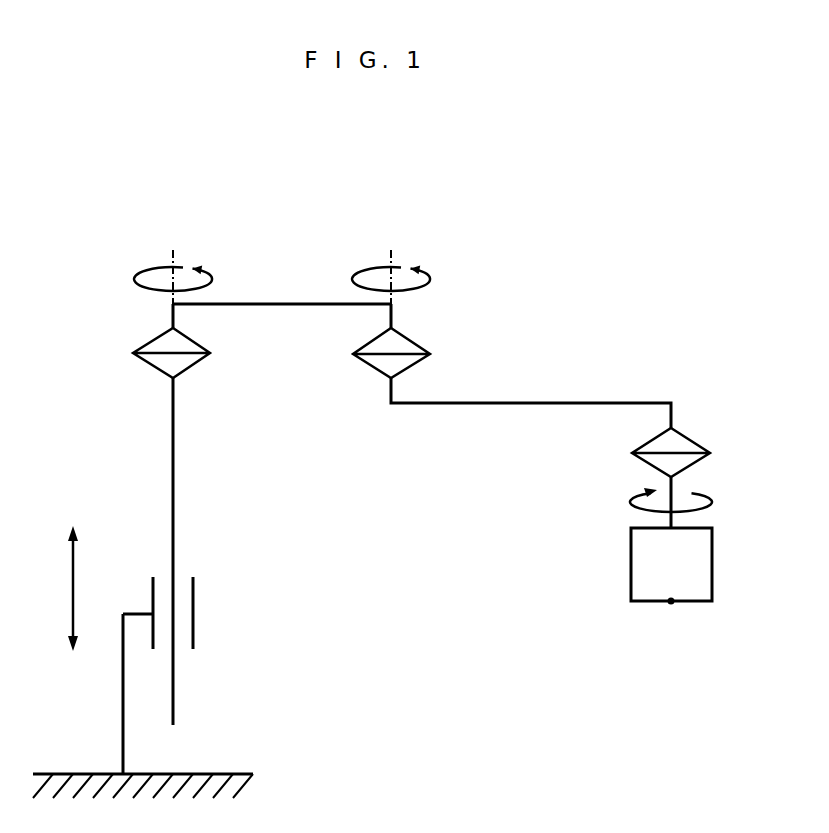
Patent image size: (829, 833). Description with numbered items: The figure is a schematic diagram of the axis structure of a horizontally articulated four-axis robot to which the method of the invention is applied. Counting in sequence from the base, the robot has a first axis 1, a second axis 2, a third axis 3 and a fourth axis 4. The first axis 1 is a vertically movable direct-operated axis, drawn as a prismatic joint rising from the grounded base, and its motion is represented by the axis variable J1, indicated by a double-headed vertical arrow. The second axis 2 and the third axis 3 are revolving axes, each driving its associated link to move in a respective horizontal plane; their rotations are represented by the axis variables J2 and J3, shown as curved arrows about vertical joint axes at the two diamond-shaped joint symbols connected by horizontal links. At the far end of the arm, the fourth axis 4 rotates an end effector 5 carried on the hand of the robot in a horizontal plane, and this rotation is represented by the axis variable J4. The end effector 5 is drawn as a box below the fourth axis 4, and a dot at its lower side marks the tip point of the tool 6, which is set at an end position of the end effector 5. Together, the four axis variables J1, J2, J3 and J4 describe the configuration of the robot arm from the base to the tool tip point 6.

The first axis 1 is at (193, 587).
The second axis 2 is at (199, 360).
The third axis 3 is at (414, 338).
The fourth axis 4 is at (697, 442).
The end effector 5 is at (712, 570).
The tip point of the tool 6 is at (671, 603).
The axis variable J1 is at (72, 586).
The axis variable J2 is at (173, 267).
The axis variable J3 is at (391, 267).
The axis variable J4 is at (648, 501).